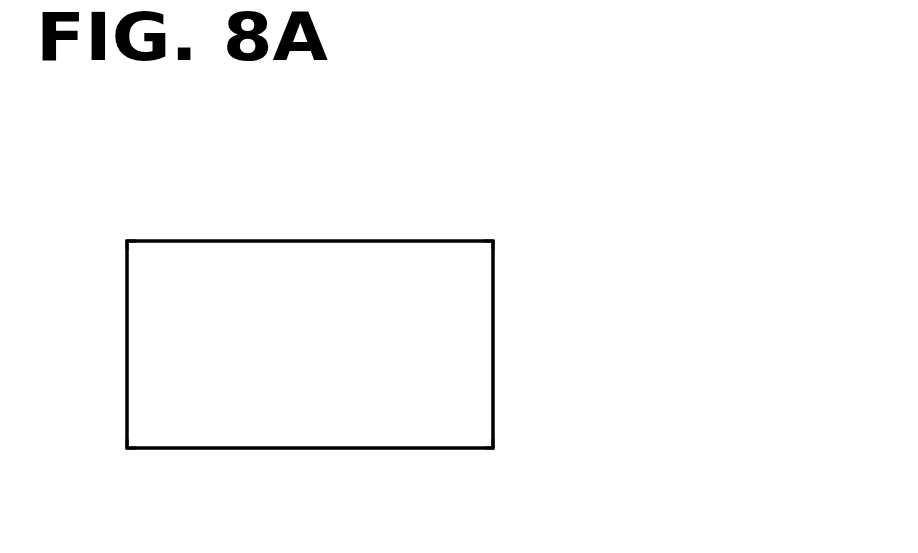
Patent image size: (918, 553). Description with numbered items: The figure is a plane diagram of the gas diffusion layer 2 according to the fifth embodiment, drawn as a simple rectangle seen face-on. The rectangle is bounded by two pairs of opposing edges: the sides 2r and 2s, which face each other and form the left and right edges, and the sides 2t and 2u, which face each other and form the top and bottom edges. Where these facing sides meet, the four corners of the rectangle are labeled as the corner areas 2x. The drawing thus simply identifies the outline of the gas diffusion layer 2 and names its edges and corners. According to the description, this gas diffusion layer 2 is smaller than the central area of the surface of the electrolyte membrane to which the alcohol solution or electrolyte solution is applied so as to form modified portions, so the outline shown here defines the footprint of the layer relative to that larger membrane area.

The gas diffusion layer 2 is at (474, 338).
The side 2t is at (328, 240).
The side 2u is at (455, 449).
The side 2r is at (127, 333).
The side 2s is at (493, 288).
The corner areas 2x is at (127, 241).